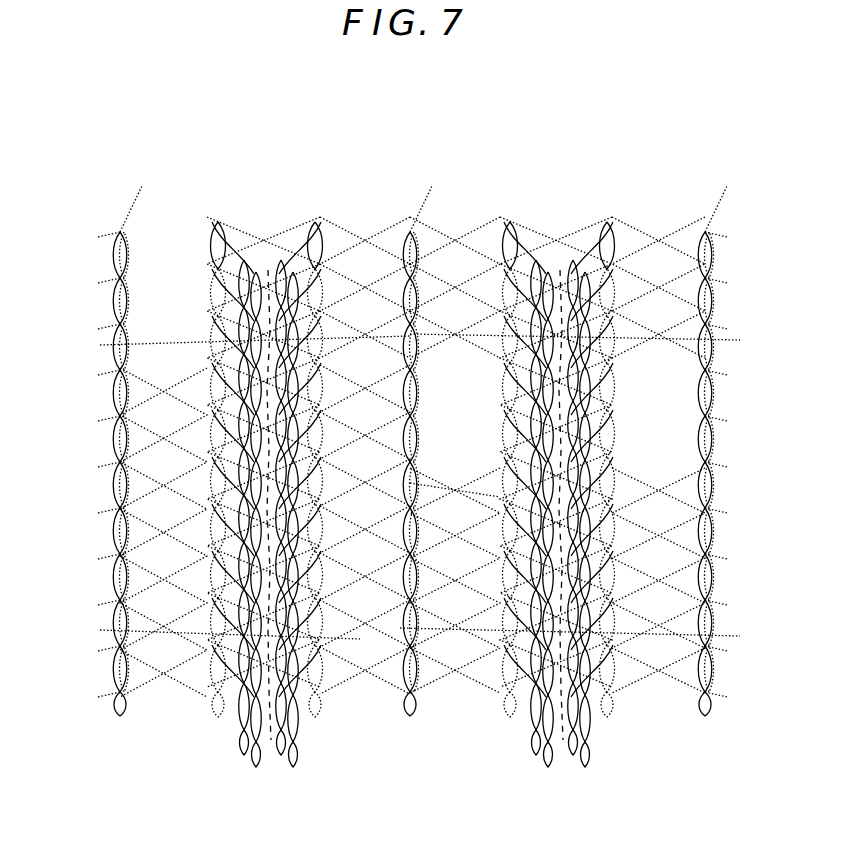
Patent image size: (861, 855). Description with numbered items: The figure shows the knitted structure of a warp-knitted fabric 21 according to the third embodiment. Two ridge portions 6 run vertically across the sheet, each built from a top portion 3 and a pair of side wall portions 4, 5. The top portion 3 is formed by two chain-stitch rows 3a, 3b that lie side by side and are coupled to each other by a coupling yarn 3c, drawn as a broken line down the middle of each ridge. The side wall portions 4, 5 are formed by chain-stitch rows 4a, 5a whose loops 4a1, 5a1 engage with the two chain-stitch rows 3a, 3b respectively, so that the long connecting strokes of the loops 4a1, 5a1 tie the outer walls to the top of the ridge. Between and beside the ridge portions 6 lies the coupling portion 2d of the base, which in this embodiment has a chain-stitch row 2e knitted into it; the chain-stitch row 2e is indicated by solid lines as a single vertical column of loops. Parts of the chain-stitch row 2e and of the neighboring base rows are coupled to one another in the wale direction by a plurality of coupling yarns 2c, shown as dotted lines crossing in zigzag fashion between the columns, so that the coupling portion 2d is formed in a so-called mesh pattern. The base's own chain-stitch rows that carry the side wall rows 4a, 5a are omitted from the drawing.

The warp-knitted fabric 21 is at (72, 131).
The chain-stitch row 2e is at (119, 232).
The coupling yarn 2c is at (323, 198).
The coupling portion 2d is at (412, 745).
The ridge portion 6 is at (409, 481).
The side wall portion 4 is at (349, 499).
The chain-stitch row 4a is at (201, 232).
The loop 4a1 is at (233, 718).
The side wall portion 5 is at (472, 484).
The chain-stitch row 5a is at (323, 243).
The loop 5a1 is at (308, 722).
The top portion 3 is at (423, 545).
The chain-stitch row 3a is at (257, 740).
The chain-stitch row 3b is at (297, 725).
The coupling yarn 3c is at (248, 712).